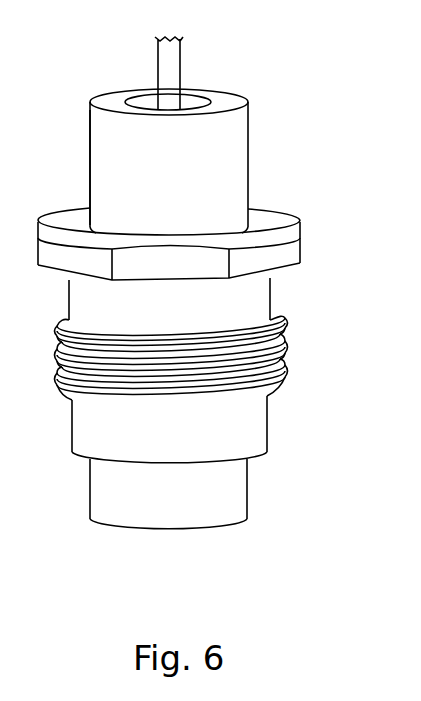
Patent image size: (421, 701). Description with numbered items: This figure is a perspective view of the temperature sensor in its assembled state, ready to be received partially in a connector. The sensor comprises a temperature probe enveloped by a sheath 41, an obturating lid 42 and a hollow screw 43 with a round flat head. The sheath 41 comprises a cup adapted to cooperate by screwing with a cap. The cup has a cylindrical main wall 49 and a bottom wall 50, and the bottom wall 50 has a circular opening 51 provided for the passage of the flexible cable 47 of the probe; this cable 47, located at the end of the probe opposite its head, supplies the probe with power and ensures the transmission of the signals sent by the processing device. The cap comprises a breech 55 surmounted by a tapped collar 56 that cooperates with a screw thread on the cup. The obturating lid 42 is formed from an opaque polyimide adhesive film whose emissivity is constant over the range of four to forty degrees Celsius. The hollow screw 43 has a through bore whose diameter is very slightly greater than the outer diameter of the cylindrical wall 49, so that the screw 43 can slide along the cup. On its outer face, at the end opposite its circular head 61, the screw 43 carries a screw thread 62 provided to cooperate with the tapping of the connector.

The sheath 41 is at (192, 128).
The obturating lid 42 is at (242, 526).
The hollow screw 43 is at (210, 380).
The flexible cable 47 is at (172, 52).
The cylindrical main wall 49 is at (103, 168).
The bottom wall 50 is at (228, 100).
The circular opening 51 is at (196, 103).
The breech 55 is at (238, 493).
The tapped collar 56 is at (263, 425).
The circular head 61 is at (295, 247).
The screw thread 62 is at (287, 353).